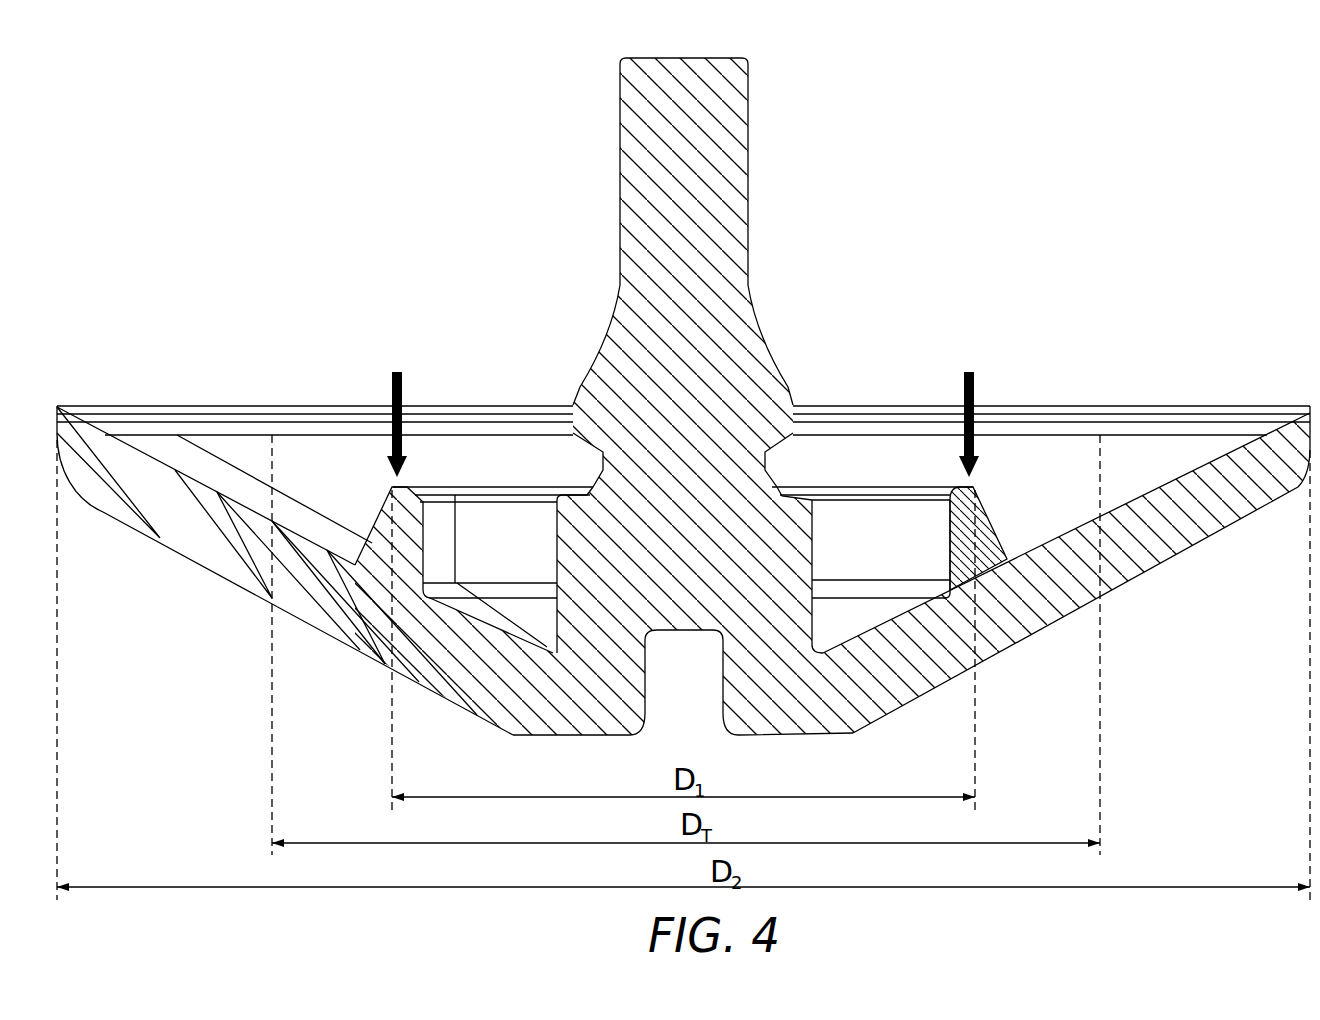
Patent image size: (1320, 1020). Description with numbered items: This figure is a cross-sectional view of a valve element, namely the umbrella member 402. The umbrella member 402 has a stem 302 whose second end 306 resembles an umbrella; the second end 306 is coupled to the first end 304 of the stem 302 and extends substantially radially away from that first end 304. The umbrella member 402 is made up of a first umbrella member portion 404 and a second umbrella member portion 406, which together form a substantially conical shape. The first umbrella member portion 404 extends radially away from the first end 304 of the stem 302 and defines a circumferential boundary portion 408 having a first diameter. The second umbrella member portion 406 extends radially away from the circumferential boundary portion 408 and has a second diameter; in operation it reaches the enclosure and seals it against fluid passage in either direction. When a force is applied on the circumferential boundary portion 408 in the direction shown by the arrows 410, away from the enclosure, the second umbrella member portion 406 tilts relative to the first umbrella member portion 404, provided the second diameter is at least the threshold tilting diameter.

The stem 302 is at (763, 240).
The first end of stem 304 is at (813, 627).
The second end of stem 306 is at (748, 62).
The umbrella member 402 is at (1180, 669).
The first umbrella member portion 404 is at (611, 749).
The second umbrella member portion 406 is at (209, 582).
The circumferential boundary portion 408 is at (376, 516).
The arrows 410 is at (392, 390).